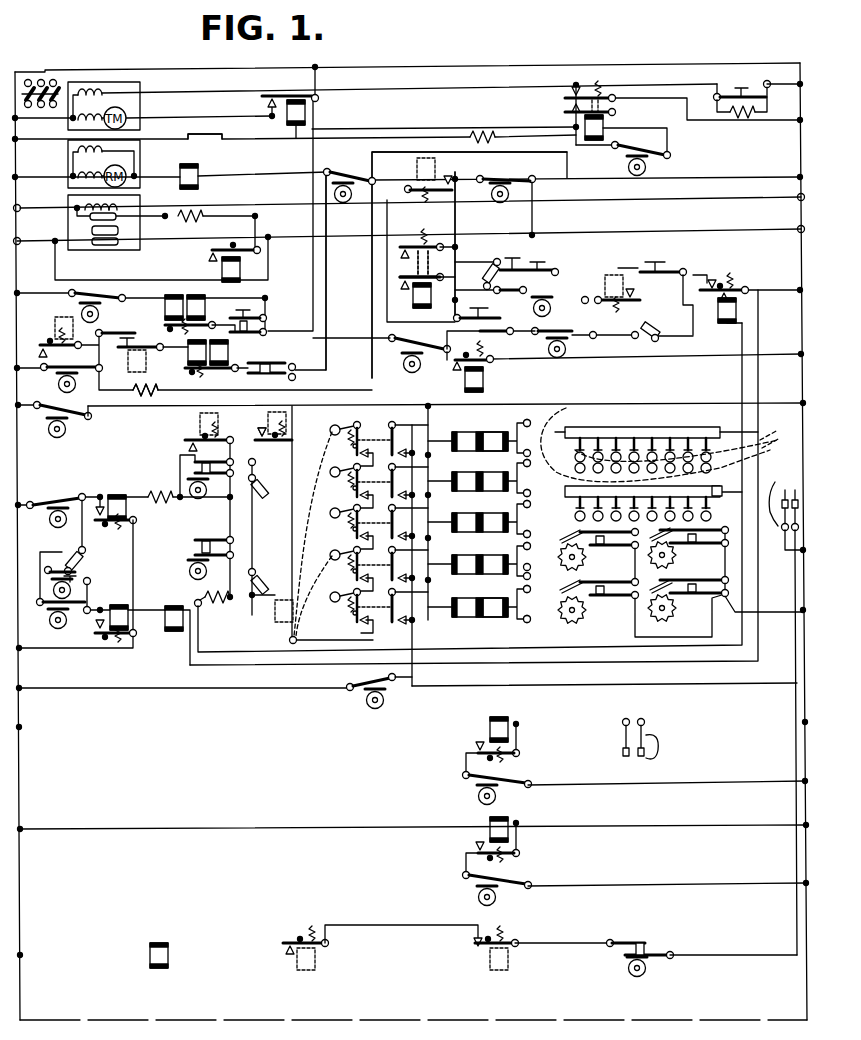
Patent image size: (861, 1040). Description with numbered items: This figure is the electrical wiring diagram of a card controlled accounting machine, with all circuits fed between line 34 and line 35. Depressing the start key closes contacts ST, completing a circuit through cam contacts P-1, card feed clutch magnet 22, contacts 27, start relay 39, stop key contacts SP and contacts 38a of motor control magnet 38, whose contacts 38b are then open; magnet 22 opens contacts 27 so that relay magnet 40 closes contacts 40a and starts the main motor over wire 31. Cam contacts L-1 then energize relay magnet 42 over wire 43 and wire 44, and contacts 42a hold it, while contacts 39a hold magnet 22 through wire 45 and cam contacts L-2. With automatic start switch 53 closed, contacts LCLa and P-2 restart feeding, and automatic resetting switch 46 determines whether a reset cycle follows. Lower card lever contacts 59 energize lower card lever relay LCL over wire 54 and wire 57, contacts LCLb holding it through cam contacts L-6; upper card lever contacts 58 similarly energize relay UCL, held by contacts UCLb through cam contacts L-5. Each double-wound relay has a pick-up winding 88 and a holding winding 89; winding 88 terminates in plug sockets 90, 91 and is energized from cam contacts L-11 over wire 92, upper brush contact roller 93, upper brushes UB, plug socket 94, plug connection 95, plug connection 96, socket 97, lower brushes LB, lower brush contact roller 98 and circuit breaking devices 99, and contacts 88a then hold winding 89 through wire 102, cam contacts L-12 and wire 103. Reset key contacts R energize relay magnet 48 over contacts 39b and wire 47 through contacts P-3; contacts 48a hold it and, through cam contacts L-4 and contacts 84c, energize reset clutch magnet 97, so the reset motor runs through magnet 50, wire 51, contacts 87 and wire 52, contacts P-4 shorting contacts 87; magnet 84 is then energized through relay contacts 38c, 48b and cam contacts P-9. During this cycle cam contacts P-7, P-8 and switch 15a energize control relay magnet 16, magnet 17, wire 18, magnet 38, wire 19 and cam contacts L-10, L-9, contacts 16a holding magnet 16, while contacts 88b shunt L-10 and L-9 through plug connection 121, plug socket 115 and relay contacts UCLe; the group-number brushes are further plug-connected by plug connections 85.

The wire 31 is at (448, 66).
The line 34 is at (40, 282).
The line 35 is at (798, 325).
The relay magnet 40 is at (307, 113).
The contacts 40a is at (268, 101).
The wire 43 is at (192, 136).
The magnet 50 is at (197, 181).
The wire 52 is at (392, 153).
The wire 44 is at (444, 130).
The relay magnet 42 is at (600, 127).
The contacts 42a is at (572, 119).
The cam contacts L-1 is at (670, 153).
The cam contacts P-4 is at (358, 177).
The cam contacts L-2 is at (527, 174).
The wire 51 is at (330, 222).
The wire 45 is at (458, 222).
The start relay 39 is at (432, 298).
The contacts 39a is at (400, 278).
The contacts 39b is at (414, 270).
The automatic start switch 53 is at (481, 274).
The start key contacts ST is at (548, 267).
The stop key contacts SP is at (671, 274).
The motor control magnet 38 is at (722, 318).
The contacts 38a is at (706, 276).
The contacts 38b is at (735, 283).
The relay contacts 38c is at (288, 945).
The cam contacts P-1 is at (103, 297).
The card feed clutch magnet 22 is at (205, 307).
The contacts 27 is at (268, 324).
The magnet 84 is at (146, 360).
The contacts 84c is at (140, 342).
The cam contacts P-3 is at (85, 358).
The reset clutch magnet 97 is at (223, 352).
The contacts 87 is at (280, 357).
The cam contacts L-4 is at (385, 352).
The relay magnet 48 is at (485, 380).
The contacts 48a is at (450, 367).
The relay contacts 48b is at (478, 946).
The reset key contacts R is at (470, 322).
The wire 47 is at (490, 337).
The cam contacts P-2 is at (538, 302).
The lower card lever relay magnet LCL is at (538, 843).
The lower card lever relay contacts LCLa is at (640, 303).
The contacts LCLb is at (468, 854).
The automatic resetting switch 46 is at (643, 343).
The wire 19 is at (197, 599).
The wire 18 is at (233, 665).
The wire 102 is at (150, 688).
The cam contacts L-12 is at (392, 692).
The cam contacts L-11 is at (86, 422).
The wire 92 is at (150, 398).
The upper card lever relay contacts UCLe is at (262, 426).
The upper card lever relay magnet UCL is at (288, 412).
The contacts UCLb is at (470, 749).
The cam contacts L-5 is at (506, 791).
The upper card lever contacts 58 is at (630, 758).
The wire 57 is at (269, 830).
The cam contacts L-6 is at (530, 883).
The cam contacts P-9 is at (656, 946).
The wire 54 is at (796, 694).
The cam contacts P-7 is at (50, 500).
The switch 15a is at (72, 552).
The cam contacts P-8 is at (75, 612).
The control relay magnet 16 is at (117, 606).
The relay contacts 16a is at (100, 640).
The magnet 17 is at (168, 606).
The cam contacts L-9 is at (192, 469).
The cam contacts L-10 is at (194, 549).
The wire 103 is at (238, 452).
The plug connection 121 is at (288, 484).
The plug socket 115 is at (287, 470).
The contacts 88b is at (357, 496).
The contacts 88a is at (392, 460).
The holding winding 89 is at (467, 439).
The pick-up winding 88 is at (492, 434).
The plug socket 91 is at (535, 456).
The plug socket 90 is at (517, 463).
The plug connection 96 is at (538, 513).
The lower brush contact roller 98 is at (532, 516).
The plug socket 94 is at (655, 445).
The plug connection 95 is at (568, 410).
The upper brush contact roller 93 is at (608, 432).
The upper brushes UB is at (622, 440).
The lower brushes LB is at (672, 503).
The plug connections 85 is at (776, 436).
The lower card lever contacts 59 is at (782, 480).
The circuit breaking devices 99 is at (672, 590).